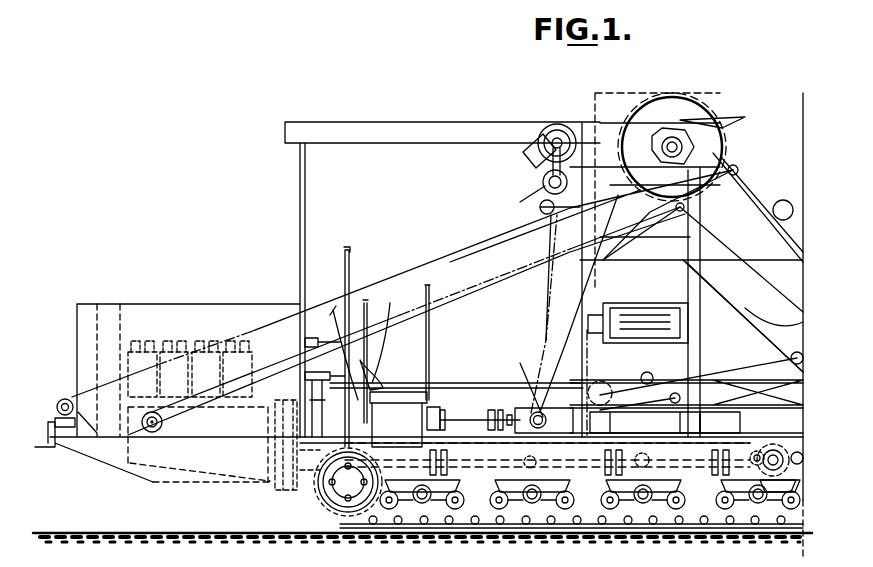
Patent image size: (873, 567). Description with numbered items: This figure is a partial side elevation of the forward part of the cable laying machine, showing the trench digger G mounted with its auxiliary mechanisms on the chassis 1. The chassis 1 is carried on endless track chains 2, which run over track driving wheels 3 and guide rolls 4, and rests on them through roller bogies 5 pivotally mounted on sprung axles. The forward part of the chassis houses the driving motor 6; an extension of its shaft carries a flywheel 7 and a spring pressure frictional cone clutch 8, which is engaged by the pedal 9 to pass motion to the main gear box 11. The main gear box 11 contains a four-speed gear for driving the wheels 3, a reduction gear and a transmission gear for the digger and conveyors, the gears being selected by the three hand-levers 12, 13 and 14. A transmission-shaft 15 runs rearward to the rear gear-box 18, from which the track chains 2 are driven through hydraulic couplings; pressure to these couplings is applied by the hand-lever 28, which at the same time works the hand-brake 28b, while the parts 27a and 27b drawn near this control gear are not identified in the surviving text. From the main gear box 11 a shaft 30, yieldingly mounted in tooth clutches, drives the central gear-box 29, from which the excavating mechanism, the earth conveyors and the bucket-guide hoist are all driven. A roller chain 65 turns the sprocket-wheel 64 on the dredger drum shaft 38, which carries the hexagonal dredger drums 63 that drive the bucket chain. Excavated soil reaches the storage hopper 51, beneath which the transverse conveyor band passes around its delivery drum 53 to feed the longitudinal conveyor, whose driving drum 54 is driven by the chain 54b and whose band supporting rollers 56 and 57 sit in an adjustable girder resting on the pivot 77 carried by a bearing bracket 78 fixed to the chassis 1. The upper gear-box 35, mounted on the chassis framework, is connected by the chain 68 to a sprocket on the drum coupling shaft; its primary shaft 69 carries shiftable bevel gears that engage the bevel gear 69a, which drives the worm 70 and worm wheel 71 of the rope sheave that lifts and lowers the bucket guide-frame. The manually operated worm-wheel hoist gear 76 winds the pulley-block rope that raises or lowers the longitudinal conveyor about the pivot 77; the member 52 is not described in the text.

The chassis 1 is at (172, 460).
The endless track chains 2 is at (395, 528).
The track driving wheels 3 is at (776, 522).
The guide rolls 4 is at (340, 514).
The roller bogies 5 is at (523, 522).
The driving motor 6 is at (208, 390).
The flywheel 7 is at (280, 485).
The spring pressure frictional cone clutch 8 is at (296, 488).
The pedal 9 is at (396, 300).
The main gear box 11 is at (398, 412).
The hand-lever 12 is at (336, 306).
The hand-lever 13 is at (366, 303).
The hand-lever 14 is at (430, 300).
The transmission-shaft 15 is at (480, 465).
The rear gear-box 18 is at (775, 444).
The clutch lever link 27a is at (325, 397).
The clutch lever link 27b is at (318, 345).
The hand-lever 28 is at (350, 336).
The hand-brake 28b is at (757, 450).
The gear-box 29 is at (541, 409).
The shaft 30 is at (480, 414).
The upper gear-box 35 is at (544, 182).
The dredger drum shaft 38 is at (685, 149).
The storage hopper 51 is at (668, 215).
The boom strut 52 is at (743, 316).
The delivery drum 53 is at (638, 323).
The driving drum 54 is at (604, 385).
The chain 54b is at (524, 383).
The band supporting roller 56 is at (795, 353).
The band supporting roller 57 is at (678, 392).
The dredger drums 63 is at (661, 146).
The sprocket-wheel 64 is at (672, 135).
The roller chain 65 is at (579, 303).
The roller-chain 68 is at (537, 314).
The primary shaft 69 is at (546, 207).
The bevel gear 69a is at (519, 190).
The worm 70 is at (530, 160).
The worm wheel 71 is at (549, 147).
The worm-wheel hoist gear 76 is at (66, 415).
The pivot 77 is at (645, 420).
The bearing bracket 78 is at (738, 420).
The trench digger G is at (442, 279).